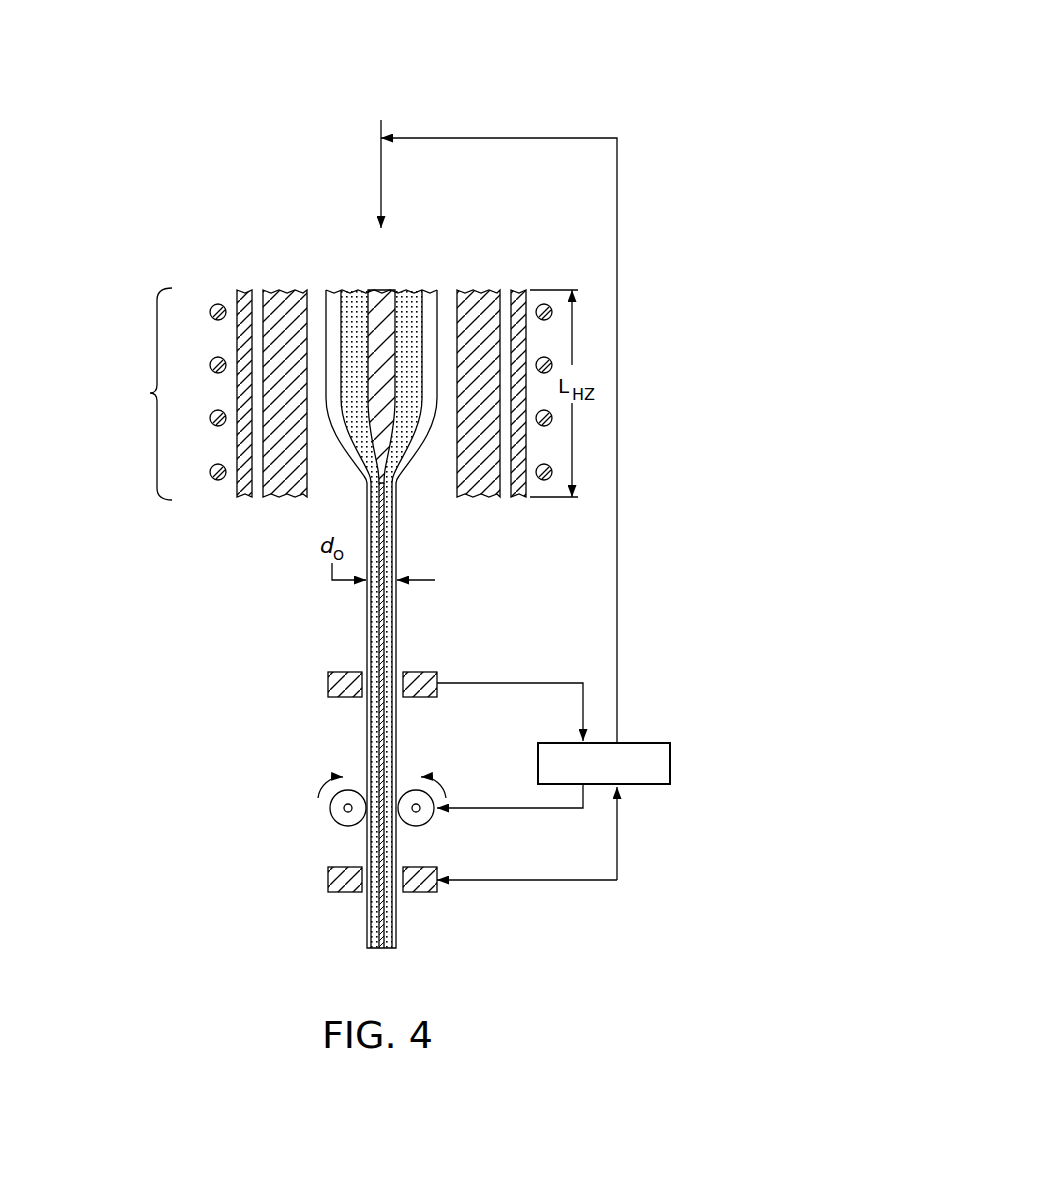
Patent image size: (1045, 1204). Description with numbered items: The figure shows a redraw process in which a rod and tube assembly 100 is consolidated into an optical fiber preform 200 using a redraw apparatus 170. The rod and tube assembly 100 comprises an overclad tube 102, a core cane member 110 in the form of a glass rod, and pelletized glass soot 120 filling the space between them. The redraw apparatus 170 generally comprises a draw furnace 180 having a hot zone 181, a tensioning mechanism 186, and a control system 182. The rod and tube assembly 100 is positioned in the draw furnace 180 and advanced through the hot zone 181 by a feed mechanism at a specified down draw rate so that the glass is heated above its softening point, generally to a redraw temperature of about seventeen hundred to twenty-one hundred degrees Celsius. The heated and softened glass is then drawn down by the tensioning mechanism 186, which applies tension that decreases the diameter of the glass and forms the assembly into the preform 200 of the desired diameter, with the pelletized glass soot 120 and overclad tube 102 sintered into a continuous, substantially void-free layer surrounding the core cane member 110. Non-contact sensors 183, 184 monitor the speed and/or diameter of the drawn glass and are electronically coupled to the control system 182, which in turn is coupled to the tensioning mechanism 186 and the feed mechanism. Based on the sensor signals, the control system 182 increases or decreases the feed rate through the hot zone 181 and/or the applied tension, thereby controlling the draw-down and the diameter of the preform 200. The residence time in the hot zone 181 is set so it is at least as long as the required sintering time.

The redraw apparatus 170 is at (626, 90).
The draw furnace 180 is at (246, 286).
The hot zone 181 is at (326, 394).
The rod and tube assembly 100 is at (329, 348).
The overclad tube 102 is at (430, 290).
The pelletized glass soot 120 is at (410, 288).
The core cane member 110 is at (383, 290).
The preform 200 is at (362, 942).
The non-contact sensor 183 is at (328, 683).
The tensioning mechanism 186 is at (308, 820).
The non-contact sensor 184 is at (328, 880).
The control system 182 is at (672, 765).